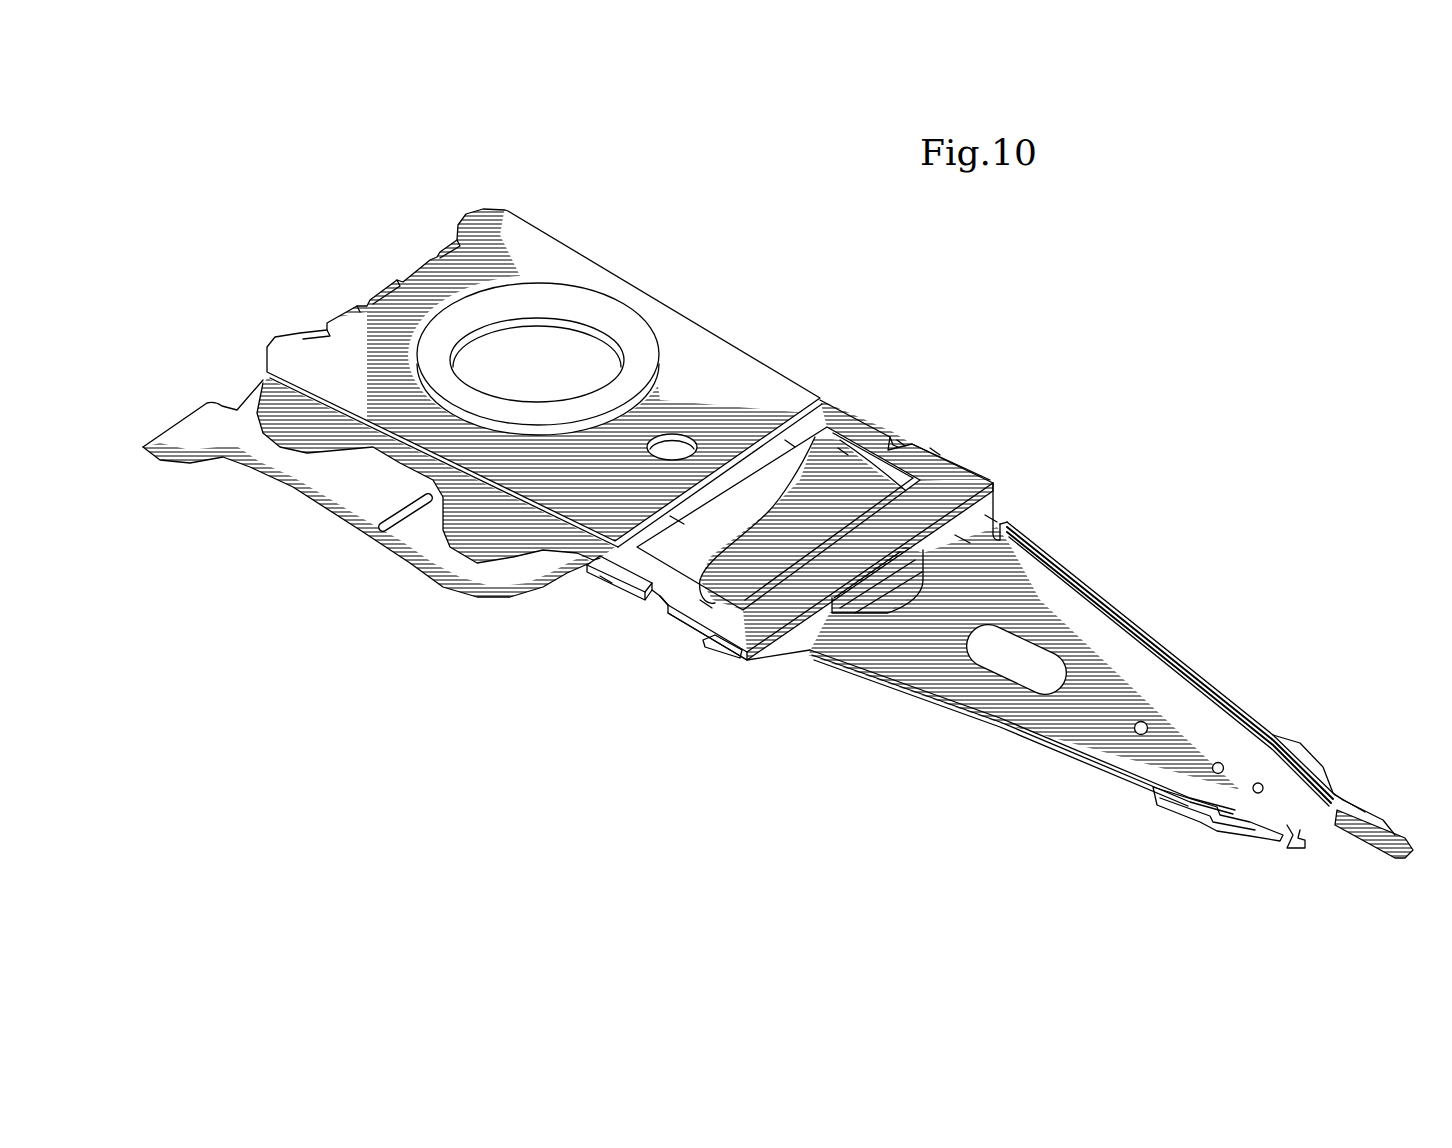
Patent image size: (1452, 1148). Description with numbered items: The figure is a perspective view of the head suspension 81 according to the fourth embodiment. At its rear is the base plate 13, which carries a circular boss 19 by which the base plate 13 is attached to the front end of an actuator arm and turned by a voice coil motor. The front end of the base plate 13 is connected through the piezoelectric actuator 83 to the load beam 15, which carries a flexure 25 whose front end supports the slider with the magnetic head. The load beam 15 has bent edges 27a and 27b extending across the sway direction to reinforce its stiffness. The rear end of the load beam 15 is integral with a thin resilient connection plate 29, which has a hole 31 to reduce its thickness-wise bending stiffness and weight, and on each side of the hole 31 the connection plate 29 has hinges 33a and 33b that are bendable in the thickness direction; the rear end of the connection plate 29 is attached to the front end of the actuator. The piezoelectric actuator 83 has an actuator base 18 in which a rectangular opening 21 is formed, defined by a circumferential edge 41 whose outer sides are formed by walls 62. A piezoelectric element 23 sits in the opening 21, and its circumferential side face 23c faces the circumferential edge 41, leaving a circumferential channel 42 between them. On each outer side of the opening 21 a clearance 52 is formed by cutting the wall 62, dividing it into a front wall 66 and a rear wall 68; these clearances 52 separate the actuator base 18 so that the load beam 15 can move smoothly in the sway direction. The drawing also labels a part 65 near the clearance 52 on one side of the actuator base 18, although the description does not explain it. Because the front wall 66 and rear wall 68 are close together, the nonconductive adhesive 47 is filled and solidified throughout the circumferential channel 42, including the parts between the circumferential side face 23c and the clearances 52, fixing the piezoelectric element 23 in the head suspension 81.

The base plate 13 is at (695, 345).
The load beam 15 is at (1117, 668).
The actuator base 18 is at (985, 513).
The circular boss 19 is at (548, 312).
The opening 21 is at (797, 430).
The piezoelectric element 23 is at (850, 440).
The circumferential side face 23c is at (750, 460).
The flexure 25 is at (1207, 820).
The bent edge 27a is at (1080, 580).
The bent edge 27b is at (1005, 738).
The connection plate 29 is at (990, 520).
The hole 31 is at (807, 628).
The hinge 33a is at (963, 538).
The hinge 33b is at (830, 612).
The circumferential edge 41 is at (677, 520).
The circumferential channel 42 is at (790, 447).
The nonconductive adhesive 47 is at (918, 462).
The clearance 52 is at (897, 440).
The wall 62 is at (875, 420).
The projecting tab 65 is at (627, 598).
The front wall 66 is at (935, 450).
The rear wall 68 is at (838, 453).
The head suspension 81 is at (1193, 232).
The piezoelectric actuator 83 is at (1037, 345).